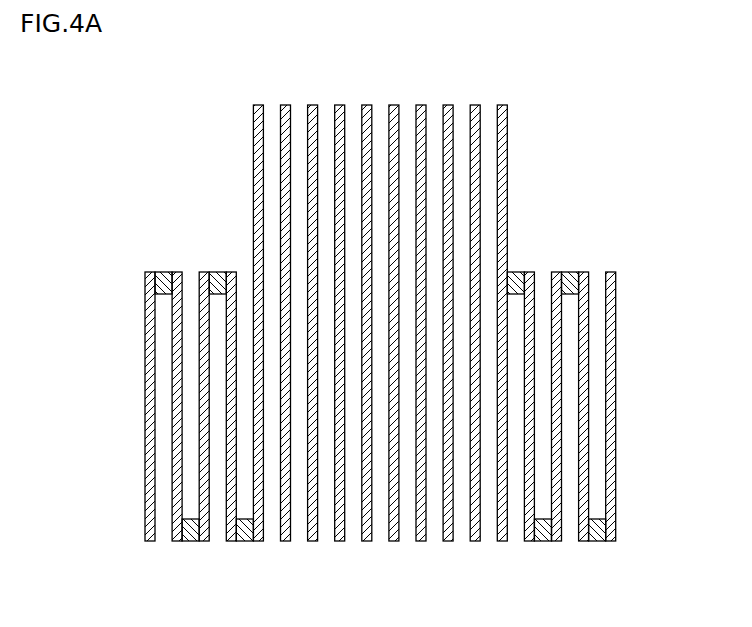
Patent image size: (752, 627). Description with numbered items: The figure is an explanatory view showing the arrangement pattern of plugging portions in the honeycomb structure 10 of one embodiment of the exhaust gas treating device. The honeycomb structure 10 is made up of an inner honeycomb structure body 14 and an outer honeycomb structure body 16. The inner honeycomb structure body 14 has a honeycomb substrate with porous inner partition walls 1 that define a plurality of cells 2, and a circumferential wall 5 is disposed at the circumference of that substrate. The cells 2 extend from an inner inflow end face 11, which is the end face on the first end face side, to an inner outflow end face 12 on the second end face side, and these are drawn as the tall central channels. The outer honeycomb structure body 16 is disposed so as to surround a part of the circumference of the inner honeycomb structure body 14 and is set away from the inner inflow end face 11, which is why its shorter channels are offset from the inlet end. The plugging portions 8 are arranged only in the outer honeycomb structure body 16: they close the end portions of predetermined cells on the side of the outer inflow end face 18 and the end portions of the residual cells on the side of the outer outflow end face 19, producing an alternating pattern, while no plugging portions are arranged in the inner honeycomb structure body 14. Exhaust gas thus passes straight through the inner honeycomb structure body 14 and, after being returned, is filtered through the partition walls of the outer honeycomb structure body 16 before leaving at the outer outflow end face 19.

The honeycomb structure 10 is at (702, 87).
The porous inner partition walls 1 is at (310, 108).
The cells 2 is at (382, 108).
The circumferential wall 5 is at (254, 172).
The plugging portions 8 is at (167, 272).
The inner inflow end face 11 is at (477, 108).
The inner outflow end face 12 is at (392, 545).
The inner honeycomb structure body 14 is at (512, 139).
The outer honeycomb structure body 16 is at (620, 411).
The outer inflow end face 18 is at (144, 541).
The outer outflow end face 19 is at (150, 272).